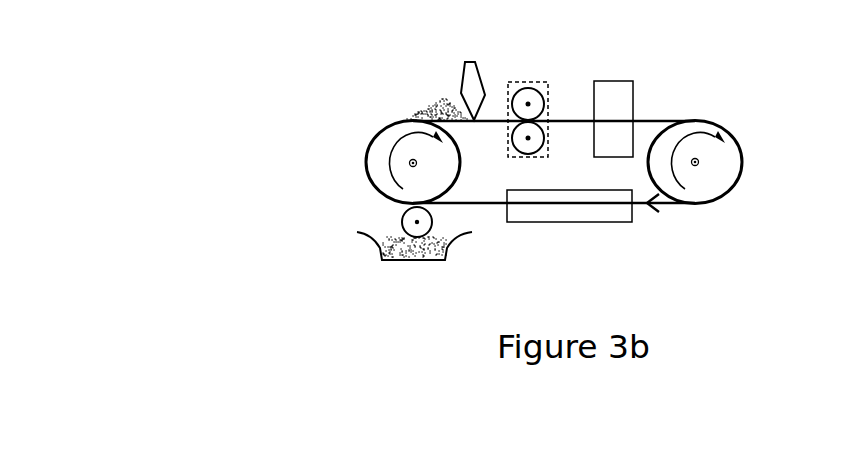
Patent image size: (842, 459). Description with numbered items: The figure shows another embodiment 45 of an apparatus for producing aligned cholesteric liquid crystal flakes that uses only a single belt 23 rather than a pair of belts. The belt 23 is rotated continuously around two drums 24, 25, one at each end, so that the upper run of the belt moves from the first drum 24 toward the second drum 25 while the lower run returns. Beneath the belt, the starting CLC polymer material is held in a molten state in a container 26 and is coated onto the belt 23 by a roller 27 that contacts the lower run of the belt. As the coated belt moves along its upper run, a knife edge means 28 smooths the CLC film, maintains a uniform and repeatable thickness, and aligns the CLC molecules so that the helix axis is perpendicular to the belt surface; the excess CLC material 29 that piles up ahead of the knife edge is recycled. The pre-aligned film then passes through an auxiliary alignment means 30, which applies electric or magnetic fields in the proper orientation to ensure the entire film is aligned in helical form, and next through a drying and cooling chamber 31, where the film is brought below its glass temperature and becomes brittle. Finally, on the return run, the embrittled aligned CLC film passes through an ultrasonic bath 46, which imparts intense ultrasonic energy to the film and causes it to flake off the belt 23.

The belt 23 is at (488, 204).
The drum 24 is at (367, 147).
The drum 25 is at (740, 137).
The container 26 is at (382, 262).
The roller 27 is at (368, 226).
The knife edge means 28 is at (467, 62).
The excess CLC material 29 is at (447, 97).
The auxiliary alignment means 30 is at (527, 81).
The drying and cooling chamber 31 is at (618, 80).
The embodiment 45 is at (685, 253).
The ultrasonic bath 46 is at (578, 212).